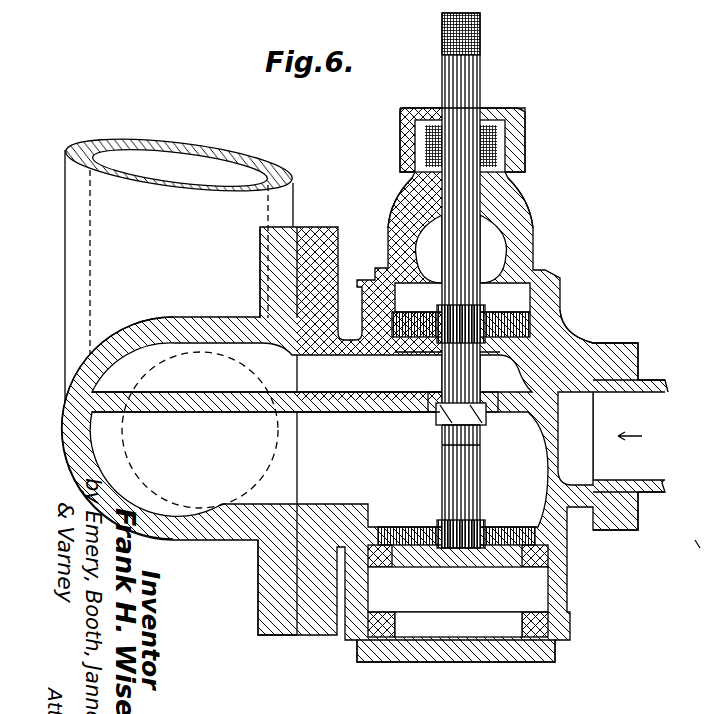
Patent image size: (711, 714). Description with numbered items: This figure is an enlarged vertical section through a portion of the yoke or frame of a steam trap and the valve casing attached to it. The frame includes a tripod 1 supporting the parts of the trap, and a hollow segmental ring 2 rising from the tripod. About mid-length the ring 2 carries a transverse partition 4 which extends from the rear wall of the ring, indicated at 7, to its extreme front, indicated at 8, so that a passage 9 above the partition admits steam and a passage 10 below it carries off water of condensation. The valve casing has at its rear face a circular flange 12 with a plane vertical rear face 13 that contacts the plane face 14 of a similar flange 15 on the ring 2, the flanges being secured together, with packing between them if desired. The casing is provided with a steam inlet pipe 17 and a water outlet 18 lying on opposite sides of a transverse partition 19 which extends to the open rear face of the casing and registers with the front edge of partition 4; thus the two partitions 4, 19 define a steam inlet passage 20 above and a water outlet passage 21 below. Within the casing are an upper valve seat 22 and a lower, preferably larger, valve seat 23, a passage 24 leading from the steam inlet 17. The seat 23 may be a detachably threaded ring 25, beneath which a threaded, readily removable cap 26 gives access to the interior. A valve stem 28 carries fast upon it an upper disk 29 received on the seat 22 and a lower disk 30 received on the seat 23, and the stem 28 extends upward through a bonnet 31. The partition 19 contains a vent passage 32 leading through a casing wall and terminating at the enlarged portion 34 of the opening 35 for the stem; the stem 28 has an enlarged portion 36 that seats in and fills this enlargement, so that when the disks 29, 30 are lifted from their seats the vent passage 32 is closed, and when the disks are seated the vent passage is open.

The tripod 1 is at (550, 308).
The segmental ring 2 is at (66, 210).
The transverse partition 4 is at (172, 404).
The rear wall of the ring 7 is at (92, 396).
The extreme front of the ring 8 is at (292, 408).
The passage above partition 9 is at (294, 380).
The passage below partition 10 is at (294, 481).
The circular flange 12 is at (345, 263).
The plane rear face 13 is at (303, 229).
The plane face 14 is at (297, 626).
The flange upon the ring 15 is at (265, 591).
The steam inlet pipe 17 is at (648, 453).
The water outlet 18 is at (703, 552).
The transverse partition 19 is at (390, 412).
The steam inlet passage 20 is at (267, 367).
The water outlet passage 21 is at (319, 469).
The upper valve seat 22 is at (548, 352).
The lower valve seat 23 is at (548, 560).
The passage 24 is at (560, 352).
The detachably threaded ring 25 is at (555, 578).
The threaded removable cap 26 is at (540, 662).
The valve stem 28 is at (446, 377).
The upper disk 29 is at (461, 314).
The lower disk 30 is at (456, 524).
The bonnet 31 is at (506, 209).
The vent passage 32 is at (488, 426).
The enlarged portion of the opening 34 is at (480, 405).
The opening for the valve stem 35 is at (432, 432).
The enlarged portion of the valve stem 36 is at (470, 448).